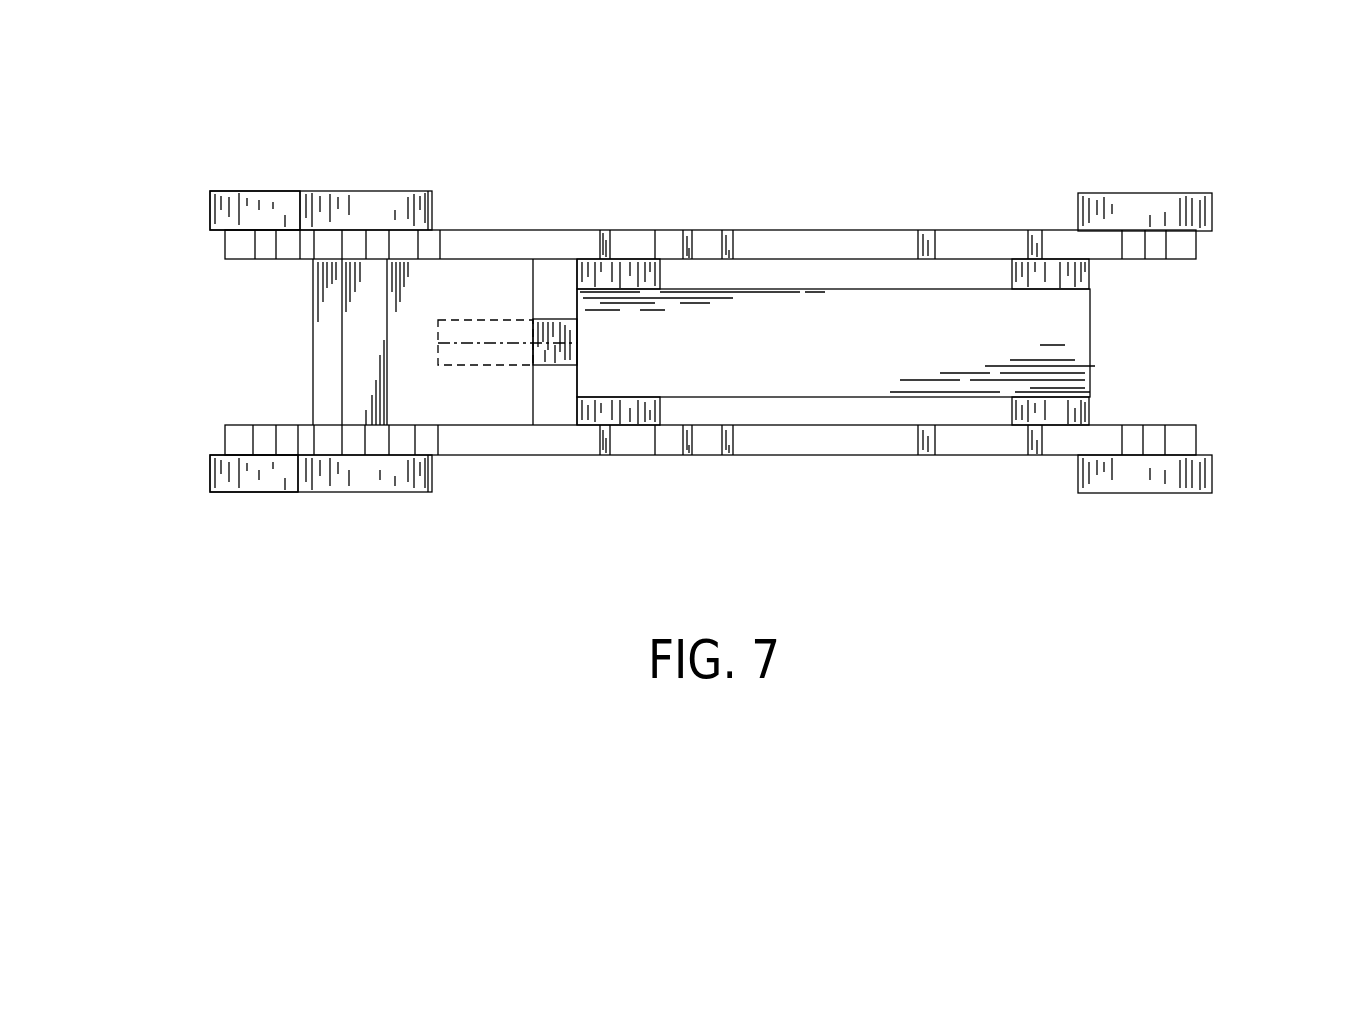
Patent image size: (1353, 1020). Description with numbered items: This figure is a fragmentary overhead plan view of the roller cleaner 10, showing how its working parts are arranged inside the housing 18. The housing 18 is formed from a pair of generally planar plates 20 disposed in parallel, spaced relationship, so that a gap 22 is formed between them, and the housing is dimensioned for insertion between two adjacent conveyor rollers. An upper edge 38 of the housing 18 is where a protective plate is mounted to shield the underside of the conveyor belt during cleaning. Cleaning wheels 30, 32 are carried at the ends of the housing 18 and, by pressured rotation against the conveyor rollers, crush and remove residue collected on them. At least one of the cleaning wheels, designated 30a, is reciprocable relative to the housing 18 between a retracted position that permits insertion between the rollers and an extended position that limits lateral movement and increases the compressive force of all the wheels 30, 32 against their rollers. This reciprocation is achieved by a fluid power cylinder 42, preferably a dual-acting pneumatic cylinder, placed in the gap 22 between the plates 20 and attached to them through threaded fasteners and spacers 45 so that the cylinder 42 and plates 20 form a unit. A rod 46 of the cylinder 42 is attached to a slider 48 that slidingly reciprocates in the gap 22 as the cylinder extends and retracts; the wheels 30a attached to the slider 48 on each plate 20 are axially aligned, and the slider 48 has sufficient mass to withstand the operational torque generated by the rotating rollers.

The roller cleaner 10 is at (927, 104).
The housing 18 is at (890, 445).
The plate 20 is at (1110, 253).
The gap 22 is at (1199, 342).
The cleaning wheel 30 is at (258, 212).
The reciprocating cleaning wheel 30a is at (222, 205).
The cleaning wheel 32 is at (1182, 195).
The upper edge 38 is at (502, 443).
The fluid power cylinder 42 is at (852, 349).
The spacer 45 is at (625, 275).
The rod 46 is at (555, 330).
The slider 48 is at (437, 397).